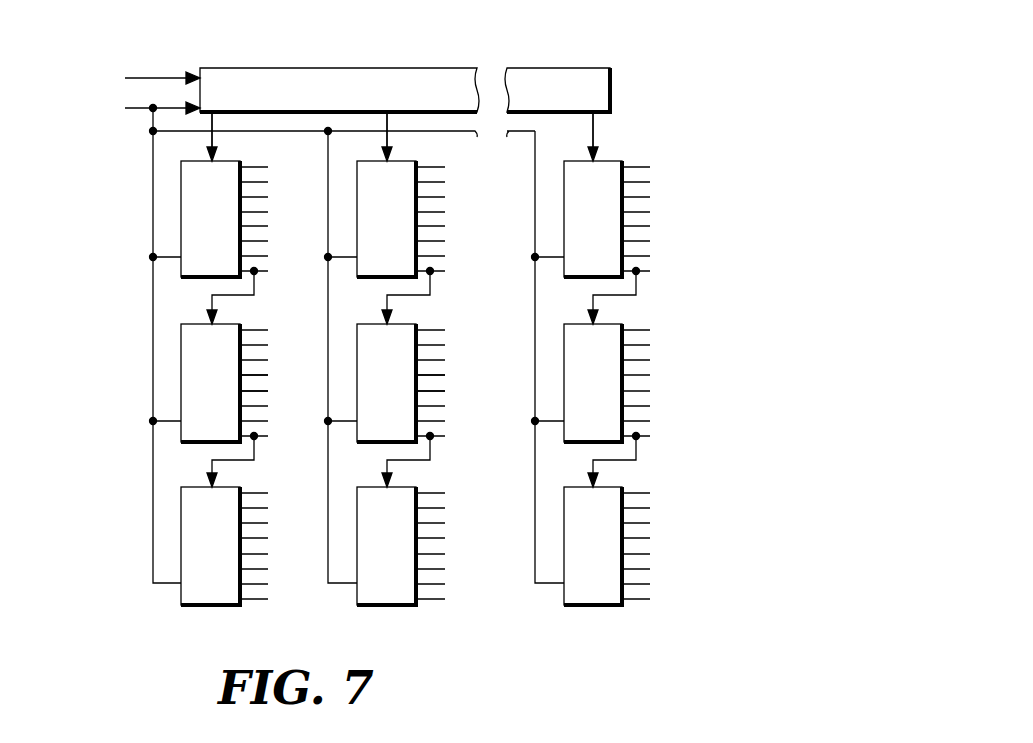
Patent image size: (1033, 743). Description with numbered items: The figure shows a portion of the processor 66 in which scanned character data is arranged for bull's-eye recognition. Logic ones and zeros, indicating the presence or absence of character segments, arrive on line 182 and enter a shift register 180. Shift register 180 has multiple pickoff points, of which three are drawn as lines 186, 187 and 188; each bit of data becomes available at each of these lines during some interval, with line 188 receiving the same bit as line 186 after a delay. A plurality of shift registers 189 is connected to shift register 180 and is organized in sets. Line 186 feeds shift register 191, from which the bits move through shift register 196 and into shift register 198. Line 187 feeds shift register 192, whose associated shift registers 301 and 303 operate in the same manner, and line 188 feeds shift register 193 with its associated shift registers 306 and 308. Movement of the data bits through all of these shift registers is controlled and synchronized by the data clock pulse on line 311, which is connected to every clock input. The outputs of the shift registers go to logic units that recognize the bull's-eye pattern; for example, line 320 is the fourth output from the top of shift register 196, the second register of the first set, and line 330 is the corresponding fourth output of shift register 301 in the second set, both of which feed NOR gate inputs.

The processor 66 is at (656, 56).
The shift register 180 is at (333, 105).
The line 182 is at (137, 77).
The line 311 is at (137, 107).
The line 186 is at (214, 136).
The line 187 is at (389, 136).
The line 188 is at (595, 128).
The plurality of shift registers 189 is at (85, 400).
The shift register 191 is at (198, 223).
The shift register 192 is at (374, 223).
The shift register 193 is at (581, 223).
The shift register 196 is at (198, 386).
The shift register 198 is at (198, 549).
The shift register 301 is at (374, 386).
The shift register 303 is at (374, 549).
The shift register 306 is at (581, 386).
The shift register 308 is at (581, 549).
The line 320 is at (262, 377).
The line 330 is at (440, 377).